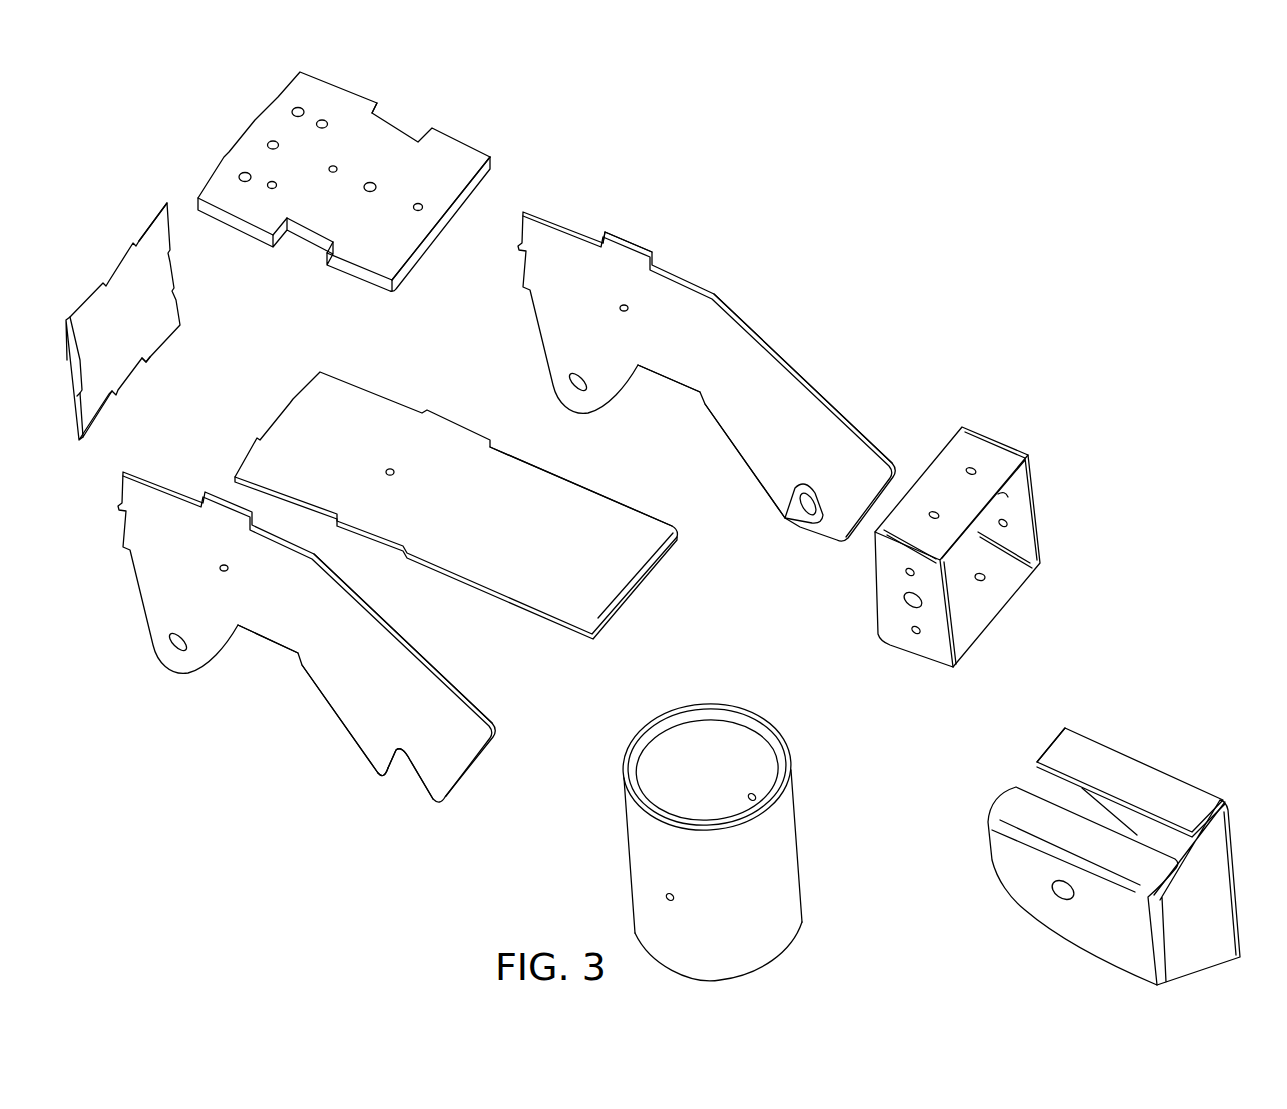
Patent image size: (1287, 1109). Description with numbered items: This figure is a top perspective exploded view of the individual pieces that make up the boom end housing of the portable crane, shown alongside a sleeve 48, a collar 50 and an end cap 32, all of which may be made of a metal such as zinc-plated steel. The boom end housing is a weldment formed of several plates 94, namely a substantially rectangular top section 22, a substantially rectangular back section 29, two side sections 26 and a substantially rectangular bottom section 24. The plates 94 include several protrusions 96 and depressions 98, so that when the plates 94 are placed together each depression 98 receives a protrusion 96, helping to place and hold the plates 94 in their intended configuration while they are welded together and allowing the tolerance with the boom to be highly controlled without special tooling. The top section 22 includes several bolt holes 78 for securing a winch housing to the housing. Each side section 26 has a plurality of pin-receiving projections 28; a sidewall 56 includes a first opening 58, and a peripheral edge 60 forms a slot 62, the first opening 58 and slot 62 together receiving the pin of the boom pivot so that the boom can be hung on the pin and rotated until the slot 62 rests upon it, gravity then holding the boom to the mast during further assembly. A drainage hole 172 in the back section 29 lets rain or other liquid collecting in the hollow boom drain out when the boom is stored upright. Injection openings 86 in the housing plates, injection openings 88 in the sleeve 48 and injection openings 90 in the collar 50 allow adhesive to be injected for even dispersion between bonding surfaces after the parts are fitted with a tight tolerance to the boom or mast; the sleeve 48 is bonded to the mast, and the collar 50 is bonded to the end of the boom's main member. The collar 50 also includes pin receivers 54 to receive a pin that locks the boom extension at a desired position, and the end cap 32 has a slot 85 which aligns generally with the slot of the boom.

The substantially rectangular top section 22 is at (466, 130).
The substantially rectangular bottom section 24 is at (487, 603).
The side sections 26 is at (768, 338).
The pin-receiving projections 28 is at (632, 398).
The substantially rectangular back section 29 is at (185, 308).
The end cap 32 is at (1152, 768).
The sleeve 48 is at (803, 828).
The collar 50 is at (995, 435).
The pin receivers 54 is at (905, 601).
The sidewall 56 is at (833, 538).
The first opening 58 is at (790, 512).
The peripheral edge 60 is at (383, 788).
The slot 62 is at (412, 752).
The bolt holes 78 is at (293, 107).
The slot 85 is at (1028, 782).
The injection openings 86 is at (336, 165).
The injection openings 88 is at (750, 793).
The injection openings 90 is at (967, 468).
The plates 94 is at (842, 418).
The protrusions 96 is at (642, 245).
The depressions 98 is at (405, 116).
The drainage hole 172 is at (137, 358).